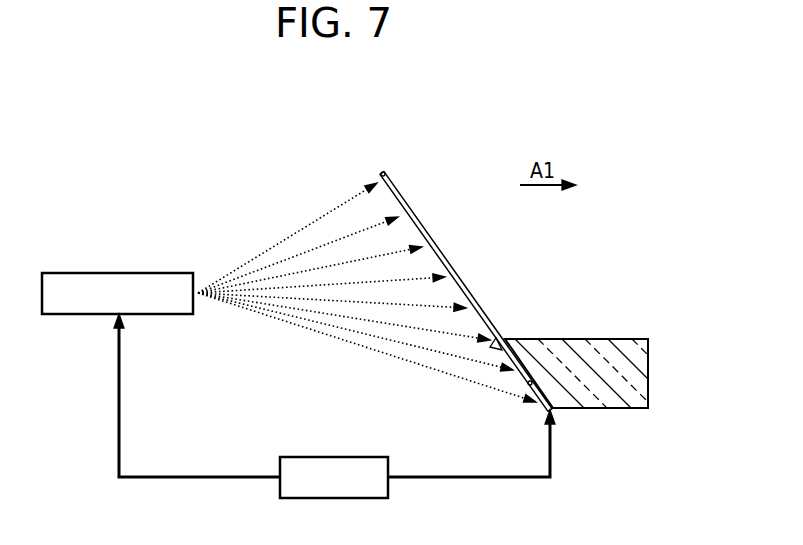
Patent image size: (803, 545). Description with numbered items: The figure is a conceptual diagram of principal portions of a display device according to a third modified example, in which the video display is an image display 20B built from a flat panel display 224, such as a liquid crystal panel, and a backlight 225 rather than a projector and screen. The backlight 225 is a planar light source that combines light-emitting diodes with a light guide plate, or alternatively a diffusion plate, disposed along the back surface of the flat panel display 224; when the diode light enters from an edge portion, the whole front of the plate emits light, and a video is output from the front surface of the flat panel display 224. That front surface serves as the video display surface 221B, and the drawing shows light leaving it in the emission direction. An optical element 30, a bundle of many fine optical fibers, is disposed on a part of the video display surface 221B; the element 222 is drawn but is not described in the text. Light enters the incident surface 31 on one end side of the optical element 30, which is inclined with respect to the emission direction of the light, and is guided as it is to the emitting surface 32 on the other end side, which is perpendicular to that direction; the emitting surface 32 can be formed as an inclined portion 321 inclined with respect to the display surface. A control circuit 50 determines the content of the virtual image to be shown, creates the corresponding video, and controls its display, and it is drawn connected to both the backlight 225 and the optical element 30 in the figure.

The image display 20B is at (280, 137).
The backlight 225 is at (171, 277).
The flat panel display 224 is at (378, 173).
The video display surface 221B is at (401, 201).
The light emitting end of light guide plate 222 is at (527, 383).
The incident surface 31 is at (499, 340).
The optical element 30 is at (597, 418).
The emitting surface 32 is at (650, 394).
The inclined portion 321 is at (650, 363).
The control circuit 50 is at (336, 457).